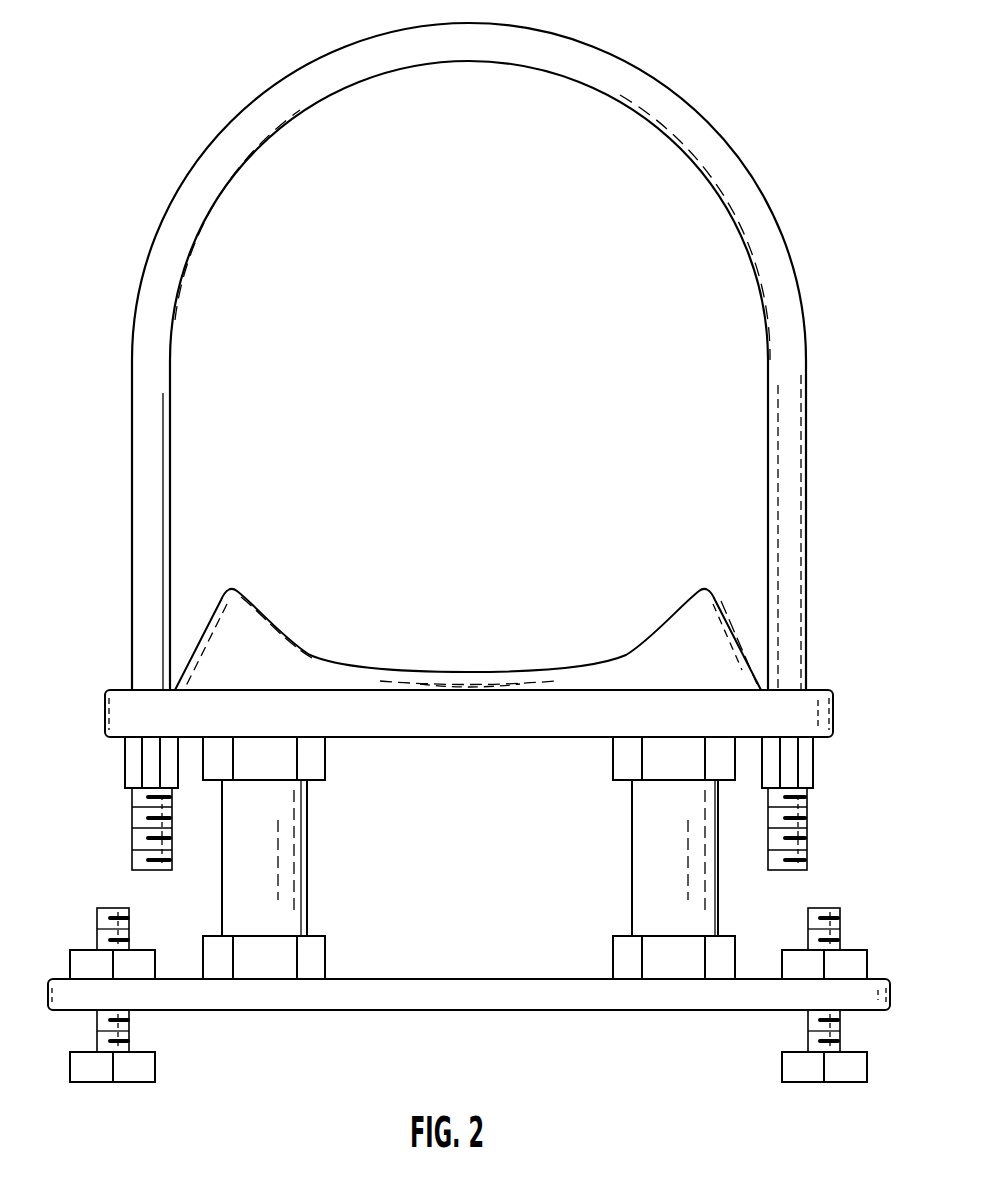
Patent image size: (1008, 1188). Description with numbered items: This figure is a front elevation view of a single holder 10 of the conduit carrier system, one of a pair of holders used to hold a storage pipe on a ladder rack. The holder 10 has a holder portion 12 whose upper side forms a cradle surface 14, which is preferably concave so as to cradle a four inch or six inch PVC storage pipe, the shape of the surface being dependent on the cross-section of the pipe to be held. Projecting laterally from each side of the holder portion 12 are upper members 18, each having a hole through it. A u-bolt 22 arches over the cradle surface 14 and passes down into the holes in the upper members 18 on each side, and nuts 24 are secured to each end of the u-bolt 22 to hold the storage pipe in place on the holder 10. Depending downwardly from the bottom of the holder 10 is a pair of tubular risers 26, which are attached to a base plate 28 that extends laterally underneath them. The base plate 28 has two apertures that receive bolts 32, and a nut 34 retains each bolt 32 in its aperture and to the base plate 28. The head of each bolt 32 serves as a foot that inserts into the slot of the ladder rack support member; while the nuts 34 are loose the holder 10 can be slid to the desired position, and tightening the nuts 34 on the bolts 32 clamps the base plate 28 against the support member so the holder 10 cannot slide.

The holder 10 is at (782, 90).
The holder portion 12 is at (364, 684).
The cradle surface 14 is at (566, 663).
The upper members 18 is at (122, 713).
The u-bolt 22 is at (789, 248).
The nuts 24 is at (123, 760).
The tubular risers 26 is at (300, 895).
The base plate 28 is at (425, 990).
The bolts 32 is at (148, 1065).
The nut 34 is at (70, 966).